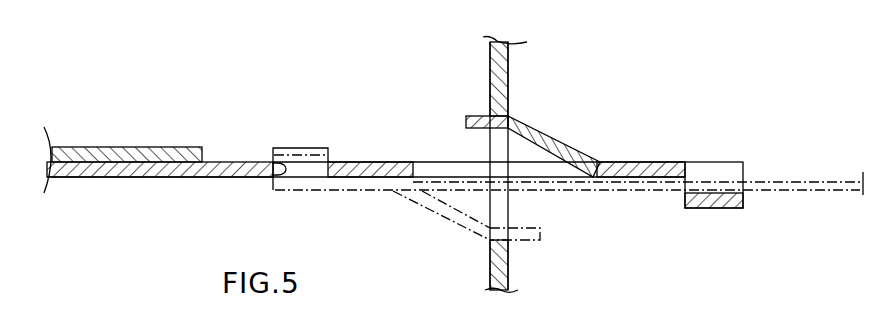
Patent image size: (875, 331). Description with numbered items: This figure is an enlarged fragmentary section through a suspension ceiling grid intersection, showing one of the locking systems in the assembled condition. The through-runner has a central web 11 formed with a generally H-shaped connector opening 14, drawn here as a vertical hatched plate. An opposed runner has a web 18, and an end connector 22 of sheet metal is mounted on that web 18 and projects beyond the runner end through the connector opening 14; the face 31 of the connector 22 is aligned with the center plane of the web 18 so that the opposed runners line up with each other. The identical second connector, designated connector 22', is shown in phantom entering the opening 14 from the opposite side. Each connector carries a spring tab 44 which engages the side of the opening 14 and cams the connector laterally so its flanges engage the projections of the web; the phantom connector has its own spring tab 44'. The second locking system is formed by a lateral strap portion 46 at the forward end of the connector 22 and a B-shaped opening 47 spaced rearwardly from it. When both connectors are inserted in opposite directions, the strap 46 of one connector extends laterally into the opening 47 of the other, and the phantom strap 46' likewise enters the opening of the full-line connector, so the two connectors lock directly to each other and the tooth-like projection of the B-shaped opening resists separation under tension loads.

The central web 11 is at (508, 270).
The connector opening 14 is at (512, 120).
The web 18 is at (117, 148).
The end connector 22 is at (366, 202).
The end connector 22' is at (570, 165).
The face of the connector 31 is at (188, 178).
The spring tab 44 is at (561, 142).
The spring tab 44' is at (466, 223).
The lateral strap portion 46 is at (738, 199).
The lateral strap portion 46' is at (331, 148).
The B-shaped opening 47 is at (276, 176).